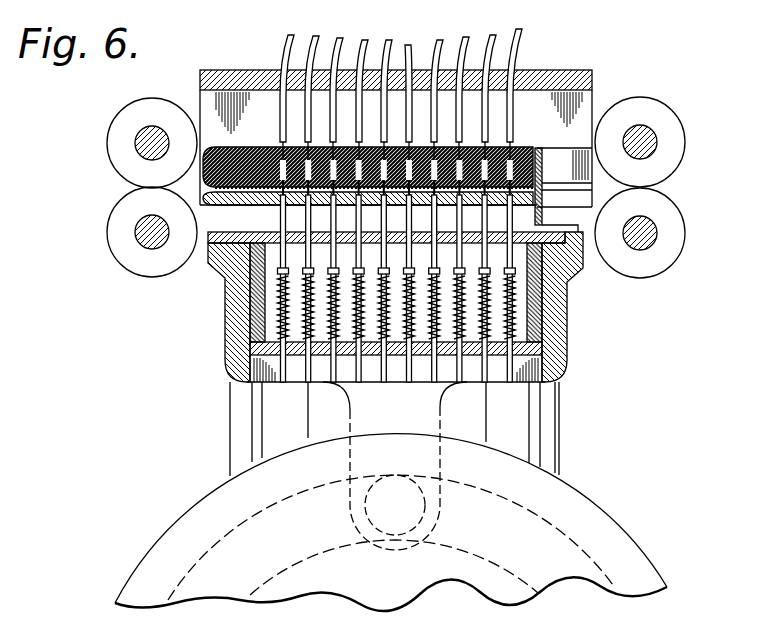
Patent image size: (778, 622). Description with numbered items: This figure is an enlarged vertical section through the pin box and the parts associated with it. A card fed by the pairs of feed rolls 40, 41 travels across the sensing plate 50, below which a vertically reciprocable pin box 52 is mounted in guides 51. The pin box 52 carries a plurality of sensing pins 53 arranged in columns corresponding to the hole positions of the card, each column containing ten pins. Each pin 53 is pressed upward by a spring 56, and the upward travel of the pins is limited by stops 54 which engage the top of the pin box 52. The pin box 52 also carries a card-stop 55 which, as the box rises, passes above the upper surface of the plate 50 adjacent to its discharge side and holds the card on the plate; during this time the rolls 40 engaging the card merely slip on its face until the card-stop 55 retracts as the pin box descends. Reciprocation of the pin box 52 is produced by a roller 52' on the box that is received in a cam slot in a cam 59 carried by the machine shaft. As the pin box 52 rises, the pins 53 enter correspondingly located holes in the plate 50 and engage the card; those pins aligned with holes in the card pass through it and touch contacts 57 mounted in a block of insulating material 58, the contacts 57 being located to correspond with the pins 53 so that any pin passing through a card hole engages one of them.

The feed roll 40 is at (119, 219).
The feed roll 41 is at (118, 148).
The sensing plate 50 is at (242, 202).
The guides 51 is at (550, 404).
The pin box 52 is at (411, 307).
The roller 52' is at (432, 505).
The sensing pins 53 is at (283, 256).
The stops 54 is at (283, 281).
The card-stop 55 is at (544, 163).
The spring 56 is at (283, 313).
The contacts 57 is at (527, 147).
The block of insulating material 58 is at (226, 155).
The cam 59 is at (622, 546).